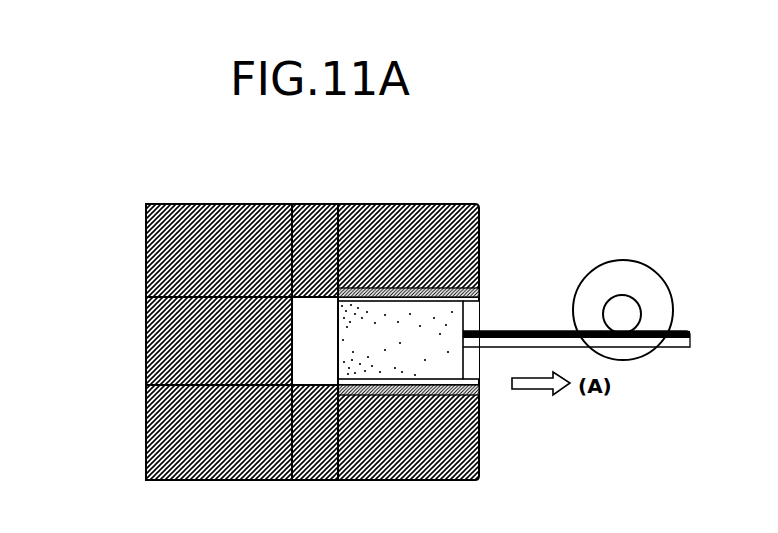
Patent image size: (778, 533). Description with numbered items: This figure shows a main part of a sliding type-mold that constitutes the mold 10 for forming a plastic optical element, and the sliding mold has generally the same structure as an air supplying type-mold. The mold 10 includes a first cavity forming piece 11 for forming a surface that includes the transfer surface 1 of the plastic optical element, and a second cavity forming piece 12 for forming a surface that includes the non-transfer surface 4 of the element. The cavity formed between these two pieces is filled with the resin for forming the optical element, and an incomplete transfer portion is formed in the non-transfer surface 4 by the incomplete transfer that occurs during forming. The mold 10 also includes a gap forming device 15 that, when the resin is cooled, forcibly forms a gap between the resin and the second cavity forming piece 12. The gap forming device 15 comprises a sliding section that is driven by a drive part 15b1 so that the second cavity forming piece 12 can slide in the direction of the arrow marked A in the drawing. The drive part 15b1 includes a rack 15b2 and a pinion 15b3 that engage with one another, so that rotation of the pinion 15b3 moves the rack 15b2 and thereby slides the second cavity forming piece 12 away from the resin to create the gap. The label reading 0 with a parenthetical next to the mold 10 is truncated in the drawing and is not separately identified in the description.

The mold 10 is at (116, 166).
The first cavity forming piece 11 is at (326, 212).
The transfer surface 1 is at (300, 254).
The gap forming device 15 is at (405, 287).
The flow channel (13) 0 is at (298, 345).
The second cavity forming piece 12 is at (427, 323).
The non-transfer surface 4 is at (334, 368).
The drive part 15b1 is at (632, 267).
The rack 15b2 is at (680, 343).
The pinion 15b3 is at (640, 307).